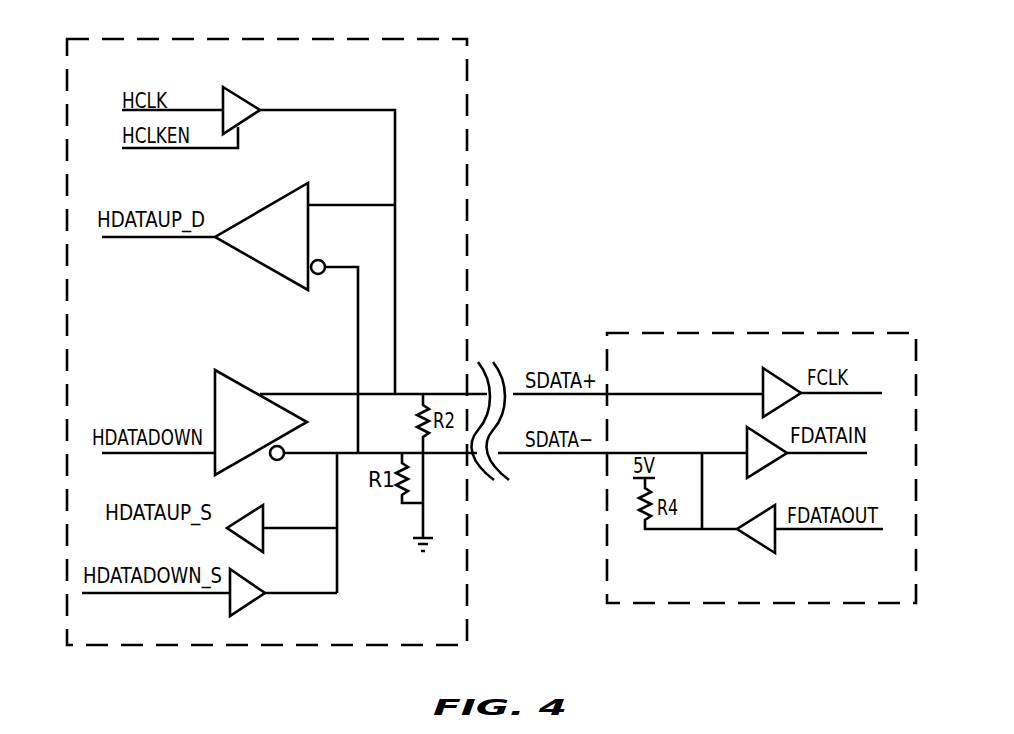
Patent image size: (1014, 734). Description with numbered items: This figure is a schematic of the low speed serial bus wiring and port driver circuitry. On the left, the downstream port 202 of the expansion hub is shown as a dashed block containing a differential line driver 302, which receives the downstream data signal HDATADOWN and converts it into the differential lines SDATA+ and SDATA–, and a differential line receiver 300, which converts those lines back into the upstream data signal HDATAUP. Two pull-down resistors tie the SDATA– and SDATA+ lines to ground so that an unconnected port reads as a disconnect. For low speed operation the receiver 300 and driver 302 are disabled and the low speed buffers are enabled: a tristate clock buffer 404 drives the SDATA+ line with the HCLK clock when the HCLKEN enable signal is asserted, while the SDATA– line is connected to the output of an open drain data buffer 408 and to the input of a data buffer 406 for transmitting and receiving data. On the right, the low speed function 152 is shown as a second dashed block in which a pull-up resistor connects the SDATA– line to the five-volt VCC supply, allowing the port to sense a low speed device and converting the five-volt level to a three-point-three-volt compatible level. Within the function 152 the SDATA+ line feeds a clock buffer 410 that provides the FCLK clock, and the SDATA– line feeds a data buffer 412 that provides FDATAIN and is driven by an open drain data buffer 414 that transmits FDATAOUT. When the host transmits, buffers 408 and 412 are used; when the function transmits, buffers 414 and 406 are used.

The low speed function 152 is at (738, 333).
The downstream port 202 is at (467, 105).
The differential line receiver 300 is at (275, 202).
The differential line driver 302 is at (240, 382).
The tristate clock buffer 404 is at (242, 93).
The data buffer 406 is at (265, 510).
The open drain data buffer 408 is at (248, 605).
The clock buffer 410 is at (763, 372).
The data buffer 412 is at (768, 465).
The open drain data buffer 414 is at (766, 548).